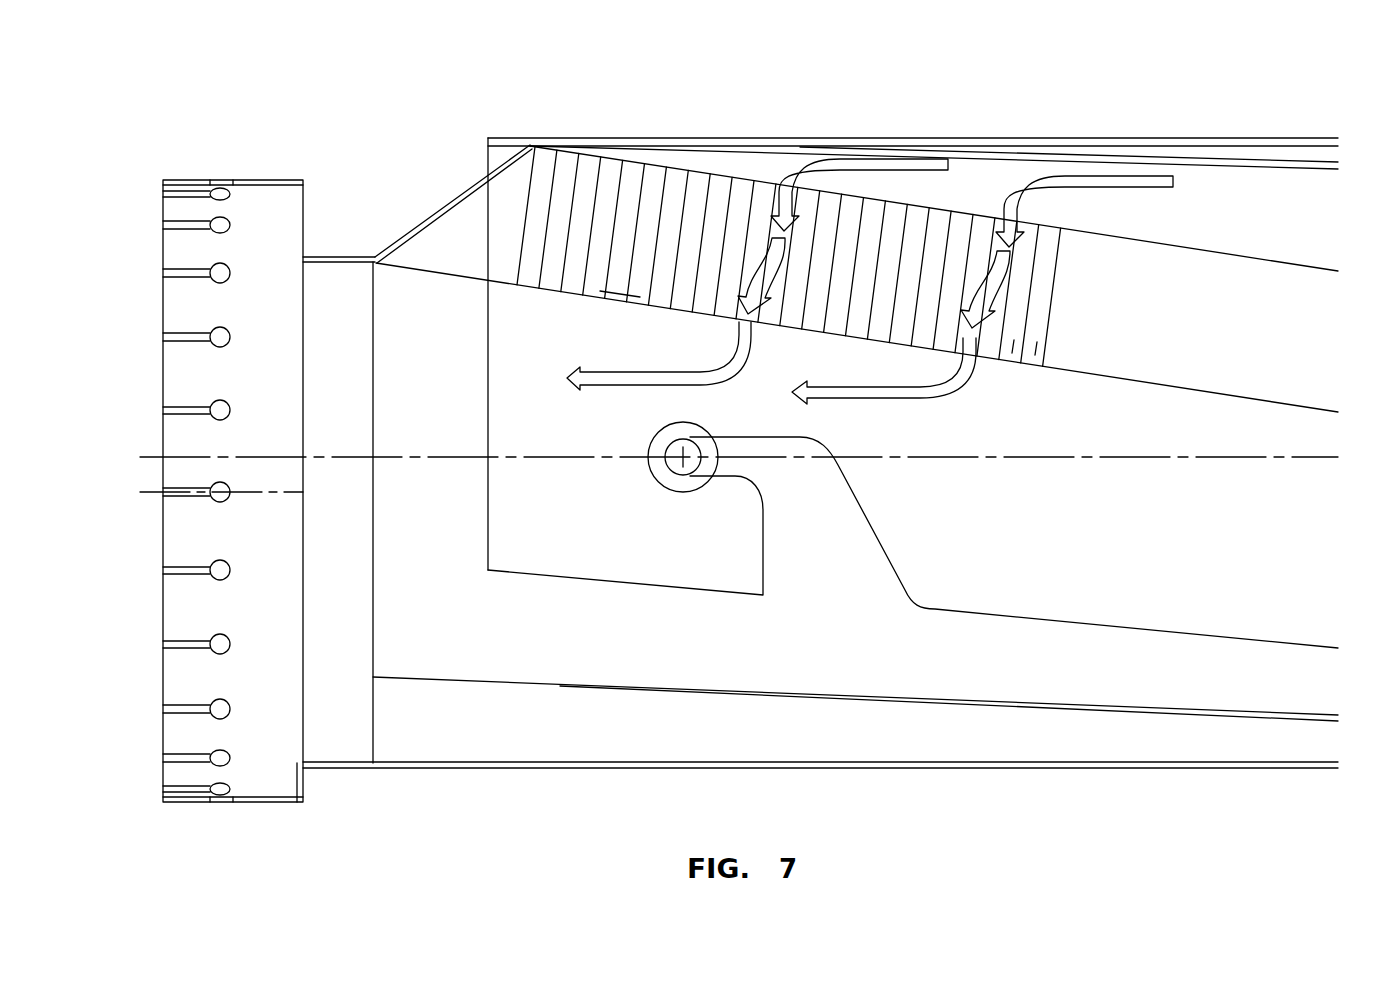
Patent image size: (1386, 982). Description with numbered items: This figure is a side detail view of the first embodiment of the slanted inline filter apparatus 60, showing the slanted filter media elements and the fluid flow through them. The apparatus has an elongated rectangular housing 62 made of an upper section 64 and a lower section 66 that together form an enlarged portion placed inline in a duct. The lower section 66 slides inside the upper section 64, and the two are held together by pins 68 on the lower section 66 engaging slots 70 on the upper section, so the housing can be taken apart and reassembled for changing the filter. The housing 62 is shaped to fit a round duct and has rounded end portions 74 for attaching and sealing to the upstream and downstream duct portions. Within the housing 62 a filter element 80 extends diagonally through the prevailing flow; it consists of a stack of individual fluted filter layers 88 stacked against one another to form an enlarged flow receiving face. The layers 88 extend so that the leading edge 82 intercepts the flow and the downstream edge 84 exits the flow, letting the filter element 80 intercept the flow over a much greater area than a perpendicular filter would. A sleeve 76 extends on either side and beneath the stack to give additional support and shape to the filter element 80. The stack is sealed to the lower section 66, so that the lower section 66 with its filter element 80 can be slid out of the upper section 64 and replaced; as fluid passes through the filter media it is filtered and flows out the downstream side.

The slanted inline filter apparatus 60 is at (1007, 127).
The housing 62 is at (1237, 152).
The upper section 64 is at (1040, 595).
The lower section 66 is at (568, 770).
The pins 68 is at (680, 468).
The slots 70 is at (862, 514).
The rounded end portions 74 is at (252, 180).
The sleeve 76 is at (431, 242).
The filter element 80 is at (1203, 278).
The leading edge 82 is at (1053, 232).
The downstream edge 84 is at (625, 295).
The fluted filter layers 88 is at (1012, 353).